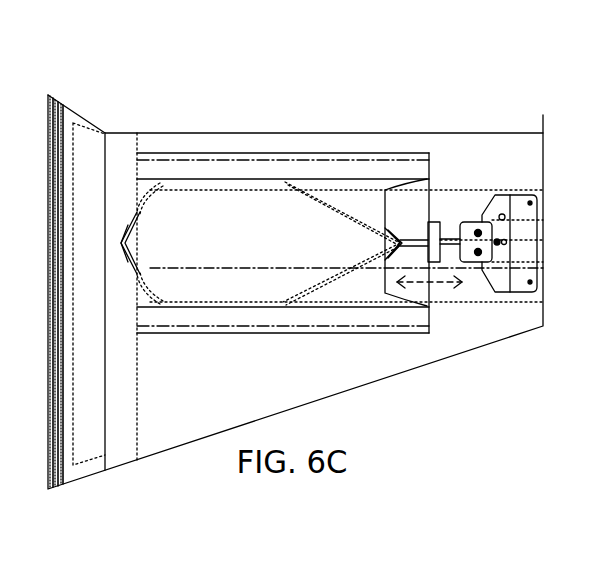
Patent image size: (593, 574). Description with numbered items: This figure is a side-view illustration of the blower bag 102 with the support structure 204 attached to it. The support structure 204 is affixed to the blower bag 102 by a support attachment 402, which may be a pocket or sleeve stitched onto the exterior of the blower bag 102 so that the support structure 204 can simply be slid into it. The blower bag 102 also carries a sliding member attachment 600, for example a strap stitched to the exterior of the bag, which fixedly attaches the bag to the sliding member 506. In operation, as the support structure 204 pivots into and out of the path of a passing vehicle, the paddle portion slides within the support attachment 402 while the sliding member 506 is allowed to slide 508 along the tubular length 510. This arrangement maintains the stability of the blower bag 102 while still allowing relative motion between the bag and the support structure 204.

The blower bag 102 is at (472, 328).
The support structure 204 is at (128, 225).
The support attachment 402 is at (300, 168).
The sliding member 506 is at (430, 236).
The slide 508 is at (439, 333).
The tubular length 510 is at (461, 222).
The sliding member attachment 600 is at (452, 238).